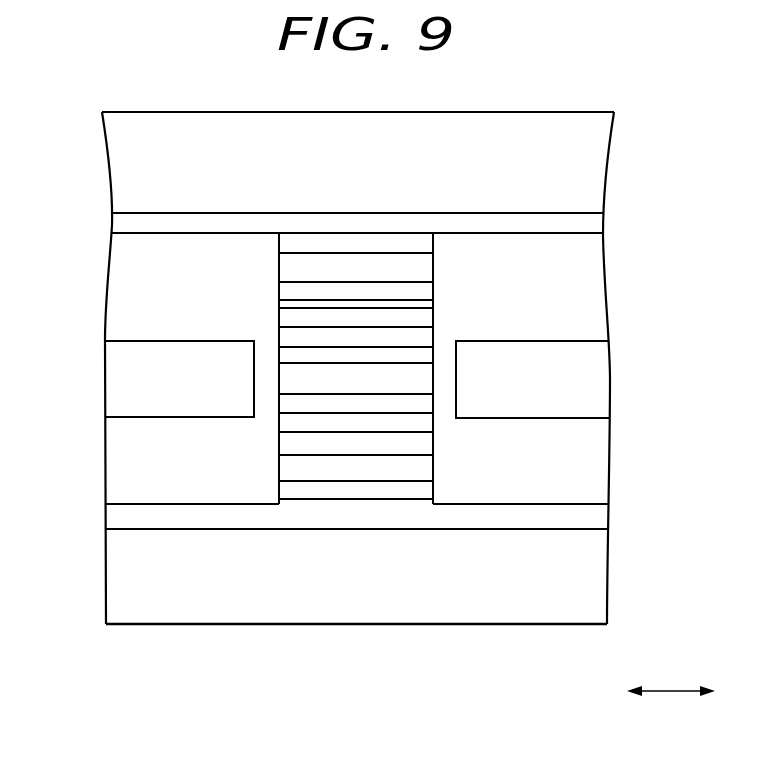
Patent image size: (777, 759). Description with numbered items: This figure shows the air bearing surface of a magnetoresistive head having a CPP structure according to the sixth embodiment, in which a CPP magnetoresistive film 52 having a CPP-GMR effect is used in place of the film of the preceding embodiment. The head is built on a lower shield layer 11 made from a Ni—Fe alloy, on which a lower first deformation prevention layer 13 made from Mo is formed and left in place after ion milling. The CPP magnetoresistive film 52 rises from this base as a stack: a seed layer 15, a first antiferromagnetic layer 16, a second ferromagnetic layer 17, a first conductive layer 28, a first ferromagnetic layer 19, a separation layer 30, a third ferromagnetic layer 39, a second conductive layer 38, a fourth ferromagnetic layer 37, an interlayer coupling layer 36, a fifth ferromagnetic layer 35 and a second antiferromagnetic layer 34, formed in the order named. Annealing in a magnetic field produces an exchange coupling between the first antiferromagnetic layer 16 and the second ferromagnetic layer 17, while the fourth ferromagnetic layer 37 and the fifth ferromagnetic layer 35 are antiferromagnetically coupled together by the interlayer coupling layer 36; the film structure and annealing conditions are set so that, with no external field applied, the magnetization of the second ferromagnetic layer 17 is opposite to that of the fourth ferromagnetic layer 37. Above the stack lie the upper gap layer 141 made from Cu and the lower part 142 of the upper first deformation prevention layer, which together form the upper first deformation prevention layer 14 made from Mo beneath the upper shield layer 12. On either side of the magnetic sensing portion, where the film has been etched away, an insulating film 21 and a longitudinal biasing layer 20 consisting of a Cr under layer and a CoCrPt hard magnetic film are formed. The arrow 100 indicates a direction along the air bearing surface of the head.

The lower shield layer 11 is at (143, 635).
The upper shield layer 12 is at (172, 130).
The lower first deformation prevention layer 13 is at (288, 516).
The upper first deformation prevention layer 14 is at (357, 187).
The upper gap layer 141 is at (300, 241).
The lower part of the upper first deformation prevention layer 142 is at (250, 226).
The seed layer 15 is at (320, 492).
The first antiferromagnetic layer 16 is at (366, 473).
The second ferromagnetic layer 17 is at (408, 445).
The first ferromagnetic layer 19 is at (426, 404).
The longitudinal biasing layer 20 is at (118, 372).
The insulating film 21 is at (118, 276).
The first conductive layer 28 is at (426, 424).
The separation layer 30 is at (426, 378).
The second antiferromagnetic layer 34 is at (342, 263).
The fifth ferromagnetic layer 35 is at (370, 288).
The interlayer coupling layer 36 is at (413, 305).
The fourth ferromagnetic layer 37 is at (427, 318).
The second conductive layer 38 is at (426, 338).
The third ferromagnetic layer 39 is at (426, 356).
The CPP magnetoresistive film 52 is at (273, 483).
The track width direction 100 is at (672, 690).